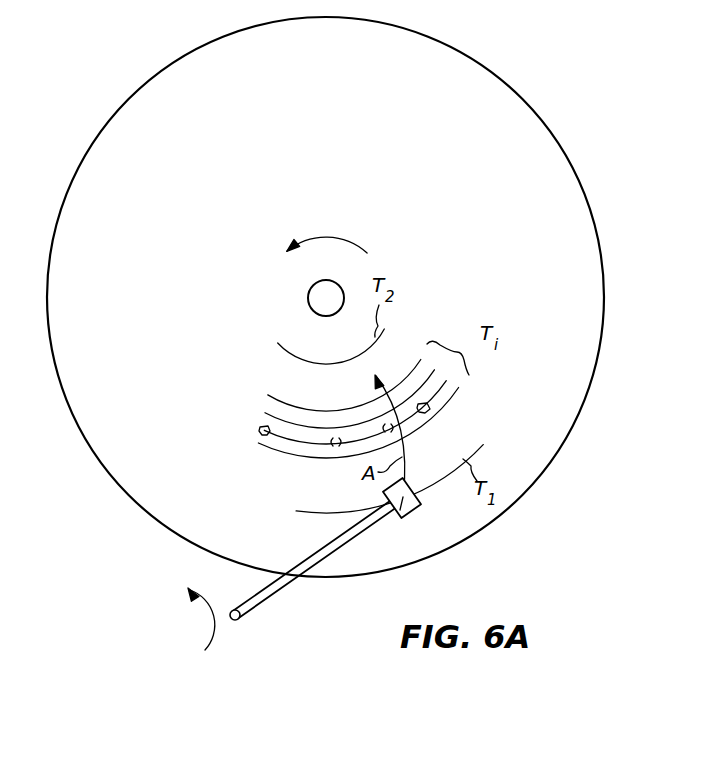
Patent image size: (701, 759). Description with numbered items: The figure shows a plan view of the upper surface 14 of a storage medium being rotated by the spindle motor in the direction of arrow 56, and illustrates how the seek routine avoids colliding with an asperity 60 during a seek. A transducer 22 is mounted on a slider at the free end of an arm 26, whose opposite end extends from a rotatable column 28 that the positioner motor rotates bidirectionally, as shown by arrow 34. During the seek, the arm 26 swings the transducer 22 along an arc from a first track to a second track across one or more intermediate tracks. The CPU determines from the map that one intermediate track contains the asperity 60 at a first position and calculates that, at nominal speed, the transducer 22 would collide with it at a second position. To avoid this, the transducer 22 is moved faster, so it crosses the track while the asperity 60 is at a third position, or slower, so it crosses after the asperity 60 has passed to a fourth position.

The upper surface 14 is at (582, 370).
The transducer 22 is at (413, 508).
The arm 26 is at (285, 592).
The rotatable column 28 is at (240, 618).
The arrow 34 is at (213, 620).
The arrow 56 is at (328, 236).
The asperity 60 is at (478, 399).